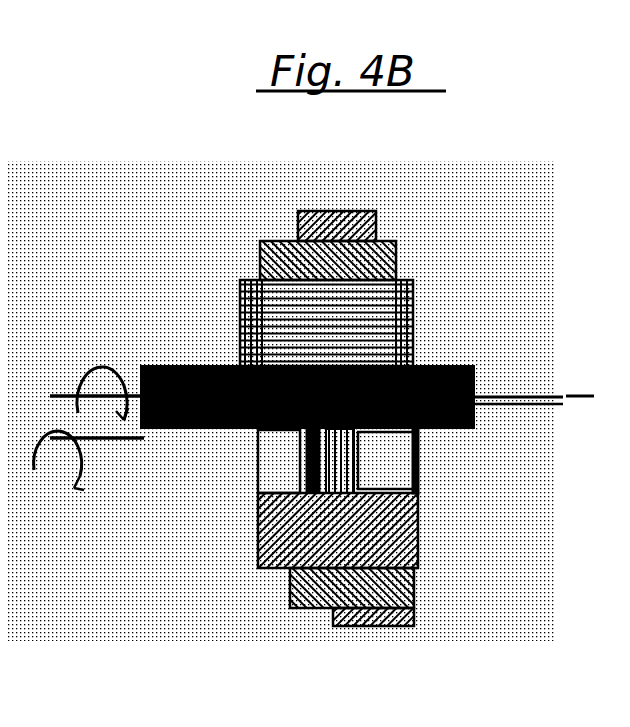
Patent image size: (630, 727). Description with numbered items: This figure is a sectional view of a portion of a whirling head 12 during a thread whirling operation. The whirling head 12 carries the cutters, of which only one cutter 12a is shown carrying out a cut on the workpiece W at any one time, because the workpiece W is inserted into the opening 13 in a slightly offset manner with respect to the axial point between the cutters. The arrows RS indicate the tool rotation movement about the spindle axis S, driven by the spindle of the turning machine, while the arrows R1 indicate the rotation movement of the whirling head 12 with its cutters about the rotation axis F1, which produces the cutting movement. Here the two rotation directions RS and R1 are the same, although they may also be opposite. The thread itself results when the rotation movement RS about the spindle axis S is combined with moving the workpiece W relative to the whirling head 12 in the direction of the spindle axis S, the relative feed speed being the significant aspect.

The whirling head 12 is at (411, 556).
The cutter 12a is at (322, 353).
The opening 13 is at (377, 446).
The workpiece W is at (183, 422).
The rotation axis F1 is at (153, 428).
The spindle axis S is at (525, 386).
The tool rotation movement RS is at (81, 381).
The rotation movement of the whirling head R1 is at (49, 474).